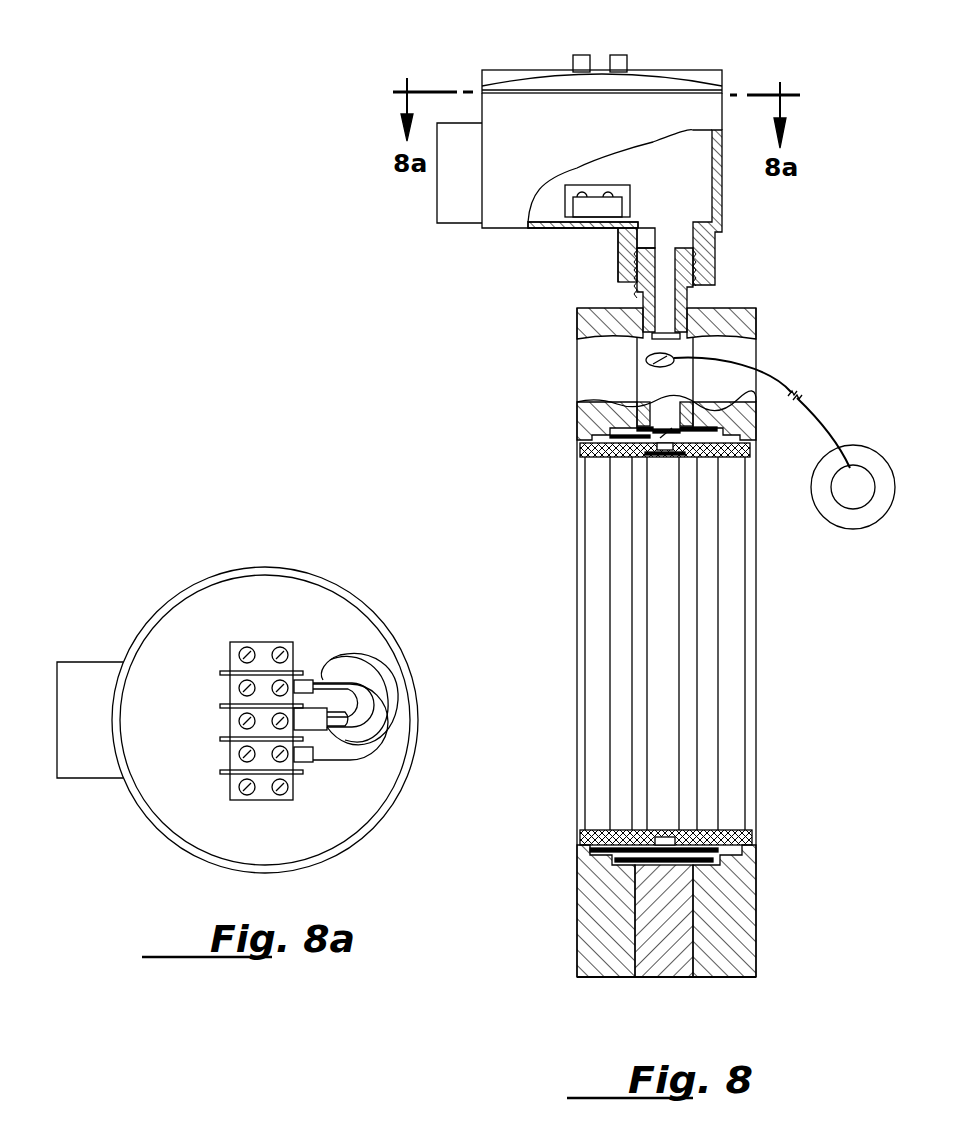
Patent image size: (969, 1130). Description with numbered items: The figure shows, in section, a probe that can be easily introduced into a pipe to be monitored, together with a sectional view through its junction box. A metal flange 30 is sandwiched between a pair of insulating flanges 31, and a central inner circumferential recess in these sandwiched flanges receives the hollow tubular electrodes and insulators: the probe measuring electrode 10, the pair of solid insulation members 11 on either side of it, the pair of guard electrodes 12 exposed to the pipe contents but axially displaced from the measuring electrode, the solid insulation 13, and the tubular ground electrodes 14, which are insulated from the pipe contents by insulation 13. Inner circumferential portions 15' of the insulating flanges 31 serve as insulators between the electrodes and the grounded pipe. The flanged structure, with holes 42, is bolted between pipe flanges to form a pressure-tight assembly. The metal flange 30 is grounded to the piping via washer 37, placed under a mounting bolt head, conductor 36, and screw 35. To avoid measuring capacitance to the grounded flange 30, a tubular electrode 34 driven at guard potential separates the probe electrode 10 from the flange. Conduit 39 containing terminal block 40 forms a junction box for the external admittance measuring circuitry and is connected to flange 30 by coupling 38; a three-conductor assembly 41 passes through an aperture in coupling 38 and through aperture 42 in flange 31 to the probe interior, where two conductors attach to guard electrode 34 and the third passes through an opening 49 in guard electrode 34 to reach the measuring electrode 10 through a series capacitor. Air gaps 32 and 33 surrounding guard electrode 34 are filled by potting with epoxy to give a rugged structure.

In FIG. 8, the probe measuring electrode 10 is at (662, 778).
In FIG. 8, the solid insulation members 11 is at (638, 562).
In FIG. 8, the guard electrodes 12 is at (618, 602).
In FIG. 8, the solid insulation 13 is at (733, 593).
In FIG. 8, the ground electrodes 14 is at (597, 828).
In FIG. 8, the inner circumferential portions of insulating flanges 15' is at (669, 642).
In FIG. 8, the metal flange 30 is at (670, 975).
In FIG. 8, the insulating flanges 31 is at (756, 920).
In FIG. 8, the air gap 32 is at (623, 851).
In FIG. 8, the air gap 33 is at (660, 863).
In FIG. 8, the tubular electrode 34 is at (607, 423).
In FIG. 8, the screw 35 is at (646, 362).
In FIG. 8, the conductor 36 is at (817, 402).
In FIG. 8, the washer 37 is at (855, 522).
In FIG. 8, the coupling 38 is at (637, 283).
In FIG. 8, the conduit 39 is at (426, 223).
In FIG. 8a, the conduit 39 is at (155, 588).
In FIG. 8, the terminal block 40 is at (630, 195).
In FIG. 8a, the terminal block 40 is at (268, 643).
In FIG. 8a, the 3-conductor assembly 41 is at (367, 657).
In FIG. 8, the aperture 42 is at (657, 318).
In FIG. 8, the opening 49 is at (630, 460).